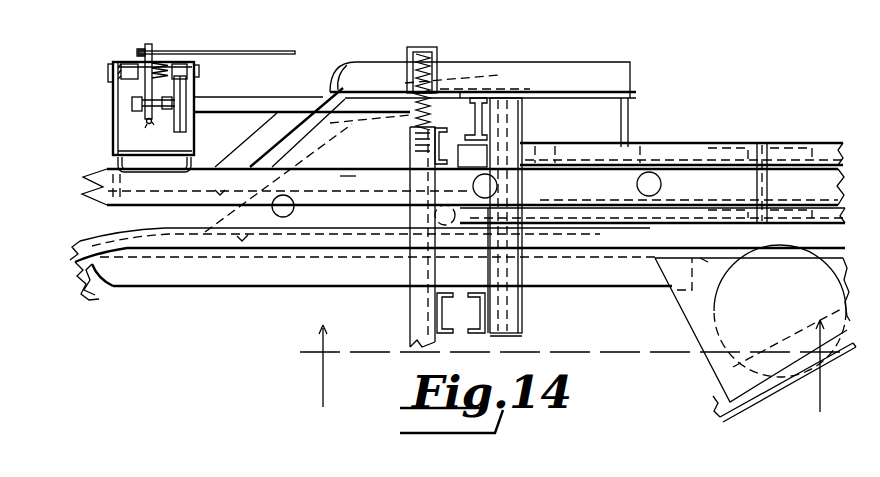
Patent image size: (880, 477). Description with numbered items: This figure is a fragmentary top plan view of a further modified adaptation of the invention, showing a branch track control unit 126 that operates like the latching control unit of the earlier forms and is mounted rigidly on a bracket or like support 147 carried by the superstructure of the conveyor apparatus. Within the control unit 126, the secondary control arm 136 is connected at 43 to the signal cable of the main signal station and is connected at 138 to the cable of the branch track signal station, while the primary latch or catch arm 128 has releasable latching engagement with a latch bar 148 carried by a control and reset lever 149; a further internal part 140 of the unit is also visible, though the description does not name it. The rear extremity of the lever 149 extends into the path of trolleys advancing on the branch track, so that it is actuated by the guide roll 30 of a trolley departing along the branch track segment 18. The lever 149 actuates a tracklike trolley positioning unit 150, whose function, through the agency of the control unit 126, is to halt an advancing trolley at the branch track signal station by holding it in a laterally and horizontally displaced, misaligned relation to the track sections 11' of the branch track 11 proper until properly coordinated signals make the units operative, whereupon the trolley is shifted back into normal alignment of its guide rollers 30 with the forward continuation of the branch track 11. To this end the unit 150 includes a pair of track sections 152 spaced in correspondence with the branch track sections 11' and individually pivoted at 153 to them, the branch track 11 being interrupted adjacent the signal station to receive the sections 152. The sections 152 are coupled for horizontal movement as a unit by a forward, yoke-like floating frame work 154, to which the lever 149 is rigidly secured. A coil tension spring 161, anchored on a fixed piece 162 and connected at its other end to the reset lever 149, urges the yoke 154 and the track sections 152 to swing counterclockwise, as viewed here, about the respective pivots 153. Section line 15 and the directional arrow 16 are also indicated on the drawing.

The branch track 11 is at (457, 271).
The branch track sections 11' is at (360, 187).
The section line 15- 15 is at (570, 341).
The direction of movement arrow 16 is at (670, 243).
The branch track segment 18 is at (125, 285).
The guide roll 30 is at (296, 213).
The connection point of secondary control arm 43 is at (148, 126).
The latching control unit 126 is at (181, 97).
The primary latch or catch arm 128 is at (183, 129).
The secondary control arm 136 is at (150, 89).
The connection point to branch track signal cable 138 is at (151, 51).
The shaft 140 is at (173, 99).
The bracket or support 147 is at (115, 123).
The latch bar 148 is at (245, 103).
The control and reset lever 149 is at (330, 77).
The trolley positioning unit 150 is at (501, 90).
The track sections 152 is at (681, 184).
The pivots 153 is at (764, 145).
The floating frame work (yoke) 154 is at (493, 131).
The coil tension spring 161 is at (430, 80).
The fixed piece 162 is at (431, 130).